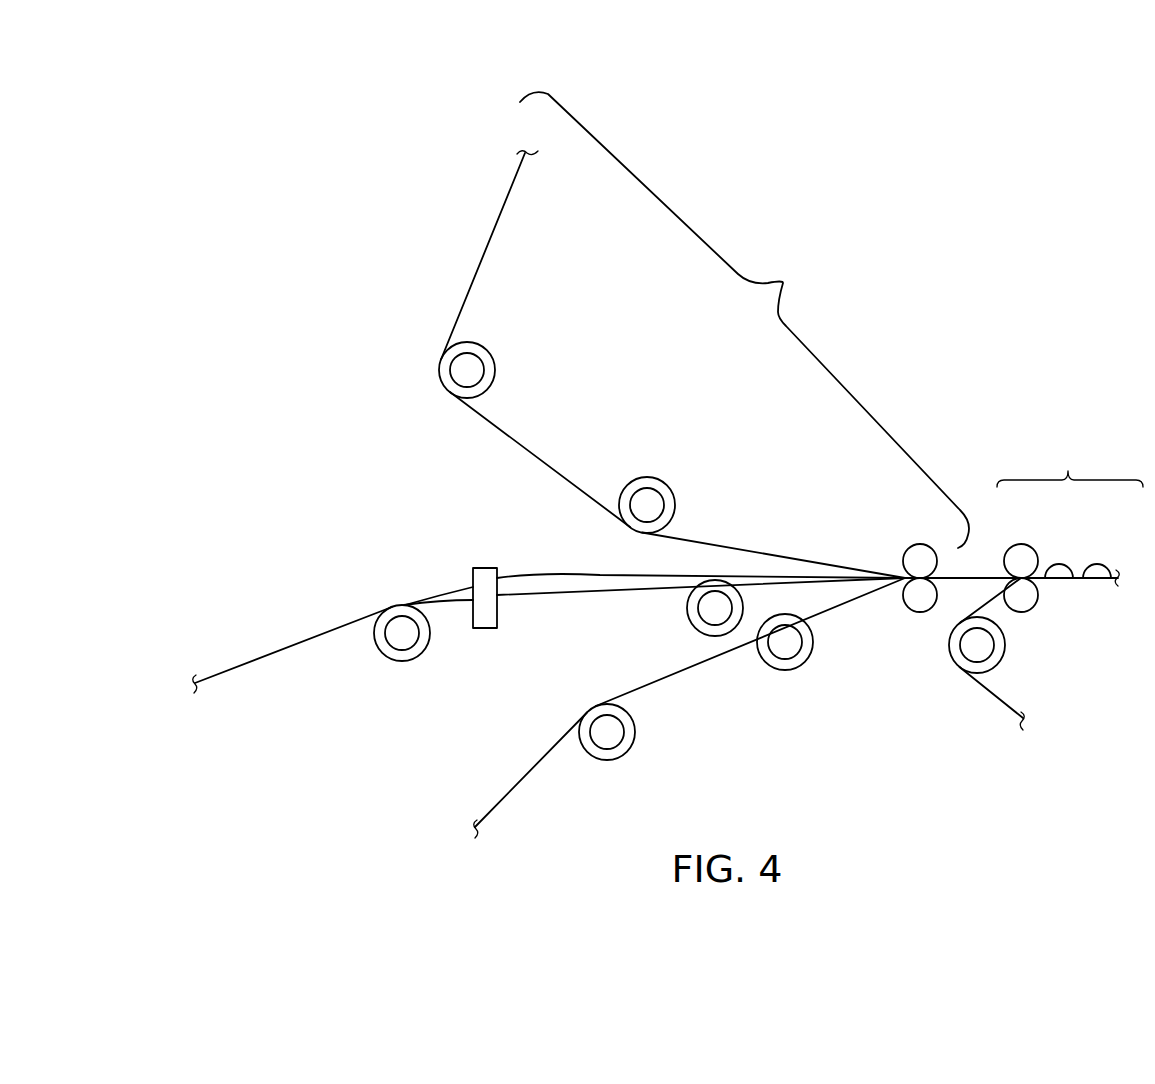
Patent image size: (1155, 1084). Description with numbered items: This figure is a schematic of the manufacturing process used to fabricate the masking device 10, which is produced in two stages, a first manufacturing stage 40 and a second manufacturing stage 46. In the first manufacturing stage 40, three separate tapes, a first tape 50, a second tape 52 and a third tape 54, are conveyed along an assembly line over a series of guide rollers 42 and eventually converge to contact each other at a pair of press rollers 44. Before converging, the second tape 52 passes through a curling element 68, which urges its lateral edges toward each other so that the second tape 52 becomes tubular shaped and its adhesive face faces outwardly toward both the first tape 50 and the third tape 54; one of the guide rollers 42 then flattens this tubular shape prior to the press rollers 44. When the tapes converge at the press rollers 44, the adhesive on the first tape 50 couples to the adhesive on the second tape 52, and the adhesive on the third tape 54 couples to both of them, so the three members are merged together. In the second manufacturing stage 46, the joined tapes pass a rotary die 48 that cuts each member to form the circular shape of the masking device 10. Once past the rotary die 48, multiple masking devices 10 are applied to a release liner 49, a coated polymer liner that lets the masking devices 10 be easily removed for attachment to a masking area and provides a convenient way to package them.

The masking device 10 is at (1060, 565).
The first manufacturing stage 40 is at (744, 320).
The guide rollers 42 is at (492, 362).
The press rollers 44 is at (918, 545).
The second manufacturing stage 46 is at (1070, 466).
The rotary die 48 is at (1020, 545).
The release liner 49 is at (995, 705).
The first tape 50 is at (467, 292).
The second tape 52 is at (288, 645).
The third tape 54 is at (513, 787).
The curling elements 68 is at (487, 567).